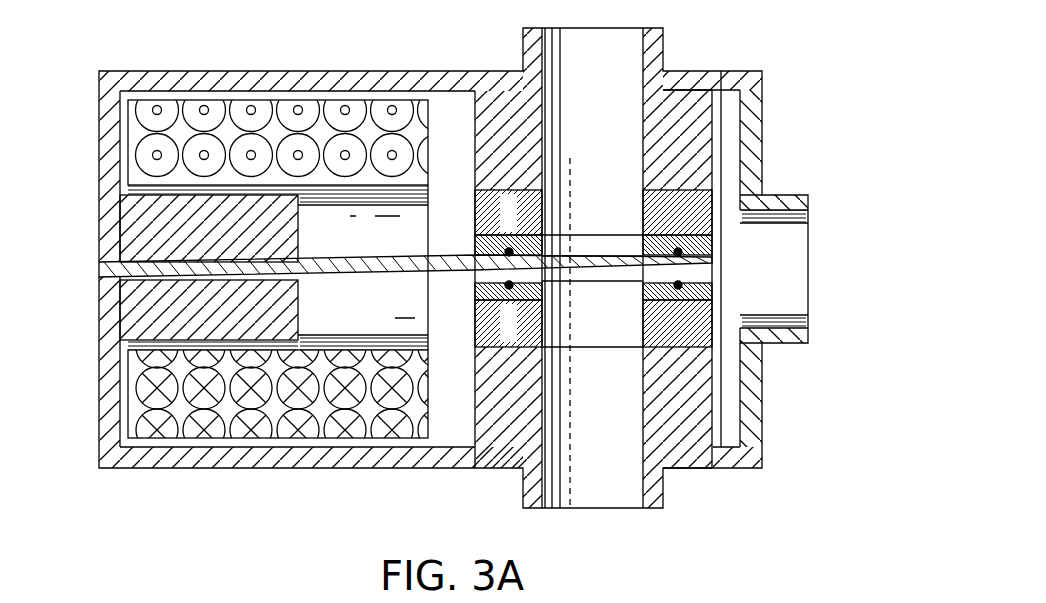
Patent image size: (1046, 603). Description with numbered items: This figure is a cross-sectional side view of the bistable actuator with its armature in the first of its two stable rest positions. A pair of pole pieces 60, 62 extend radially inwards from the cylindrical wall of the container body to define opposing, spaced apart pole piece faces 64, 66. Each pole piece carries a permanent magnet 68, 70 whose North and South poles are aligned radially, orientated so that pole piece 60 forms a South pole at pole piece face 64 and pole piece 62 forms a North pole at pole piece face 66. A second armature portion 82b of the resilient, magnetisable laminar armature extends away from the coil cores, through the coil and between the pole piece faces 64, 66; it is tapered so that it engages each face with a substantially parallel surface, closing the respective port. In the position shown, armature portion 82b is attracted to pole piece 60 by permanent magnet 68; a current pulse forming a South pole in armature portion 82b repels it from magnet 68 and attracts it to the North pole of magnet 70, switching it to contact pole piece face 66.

The pole piece 60 is at (665, 115).
The pole piece 62 is at (517, 423).
The pole piece face 64 is at (686, 243).
The pole piece face 66 is at (687, 295).
The permanent magnet 68 is at (683, 207).
The permanent magnet 70 is at (673, 323).
The second armature portion 82b is at (366, 277).